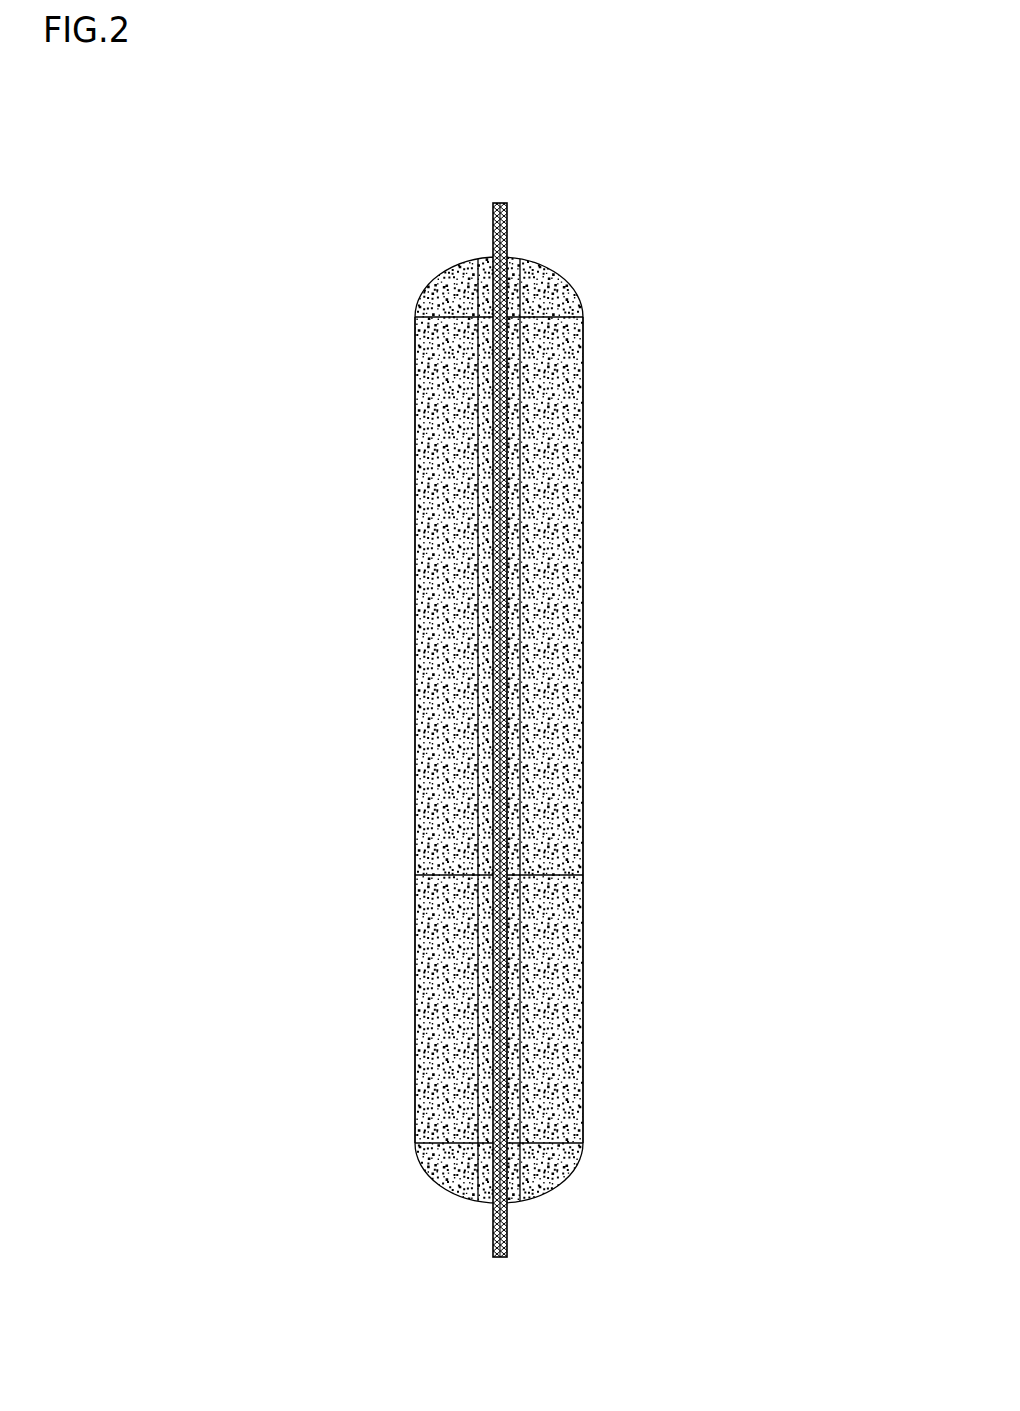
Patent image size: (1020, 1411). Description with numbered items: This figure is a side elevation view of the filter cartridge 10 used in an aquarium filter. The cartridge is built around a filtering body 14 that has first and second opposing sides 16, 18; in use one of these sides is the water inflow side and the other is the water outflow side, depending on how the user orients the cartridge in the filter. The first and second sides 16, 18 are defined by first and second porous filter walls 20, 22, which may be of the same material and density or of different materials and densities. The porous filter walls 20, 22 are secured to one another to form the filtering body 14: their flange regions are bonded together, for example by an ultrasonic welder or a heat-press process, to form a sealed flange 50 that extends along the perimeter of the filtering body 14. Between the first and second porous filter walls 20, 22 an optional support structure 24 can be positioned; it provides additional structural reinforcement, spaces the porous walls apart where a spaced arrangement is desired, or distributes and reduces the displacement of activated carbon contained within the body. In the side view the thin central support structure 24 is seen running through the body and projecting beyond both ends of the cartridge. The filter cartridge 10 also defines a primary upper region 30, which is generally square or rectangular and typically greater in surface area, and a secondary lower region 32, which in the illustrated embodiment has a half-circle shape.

The filter cartridge 10 is at (327, 222).
The filtering body 14 is at (643, 543).
The first side 16 is at (417, 721).
The second side 18 is at (583, 697).
The first porous filter wall 20 is at (415, 485).
The second porous filter wall 22 is at (583, 480).
The support structure 24 is at (497, 203).
The primary upper region 30 is at (639, 795).
The secondary lower region 32 is at (640, 986).
The sealed flange 50 is at (507, 228).